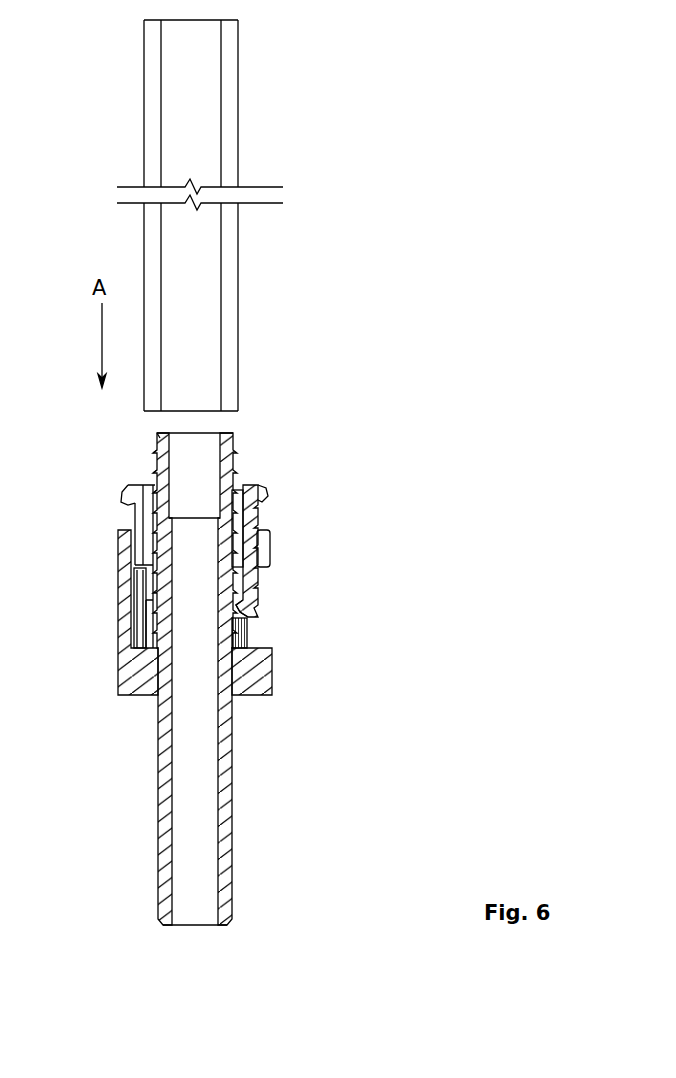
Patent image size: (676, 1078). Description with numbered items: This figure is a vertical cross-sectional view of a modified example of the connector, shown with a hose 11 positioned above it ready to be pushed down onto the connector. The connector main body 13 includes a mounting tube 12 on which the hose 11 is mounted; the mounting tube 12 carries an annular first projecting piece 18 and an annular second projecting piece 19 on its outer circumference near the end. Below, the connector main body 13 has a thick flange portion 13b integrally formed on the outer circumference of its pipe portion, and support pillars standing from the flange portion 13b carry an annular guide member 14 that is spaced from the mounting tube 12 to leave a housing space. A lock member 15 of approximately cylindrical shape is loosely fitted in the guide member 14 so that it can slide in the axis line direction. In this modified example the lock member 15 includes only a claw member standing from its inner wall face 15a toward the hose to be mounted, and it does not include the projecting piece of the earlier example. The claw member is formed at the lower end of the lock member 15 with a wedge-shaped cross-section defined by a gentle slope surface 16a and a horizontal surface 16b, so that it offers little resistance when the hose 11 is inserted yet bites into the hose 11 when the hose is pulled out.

The hose 11 is at (228, 95).
The mounting tube 12 is at (205, 448).
The connector main body 13 is at (189, 637).
The flange portion 13b is at (262, 681).
The guide member 14 is at (262, 540).
The lock member 15 is at (195, 548).
The inner wall face 15a is at (153, 523).
The gentle slope surface 16a is at (240, 603).
The horizontal surface 16b is at (248, 630).
The first projecting piece 18 is at (156, 448).
The second projecting piece 19 is at (156, 471).